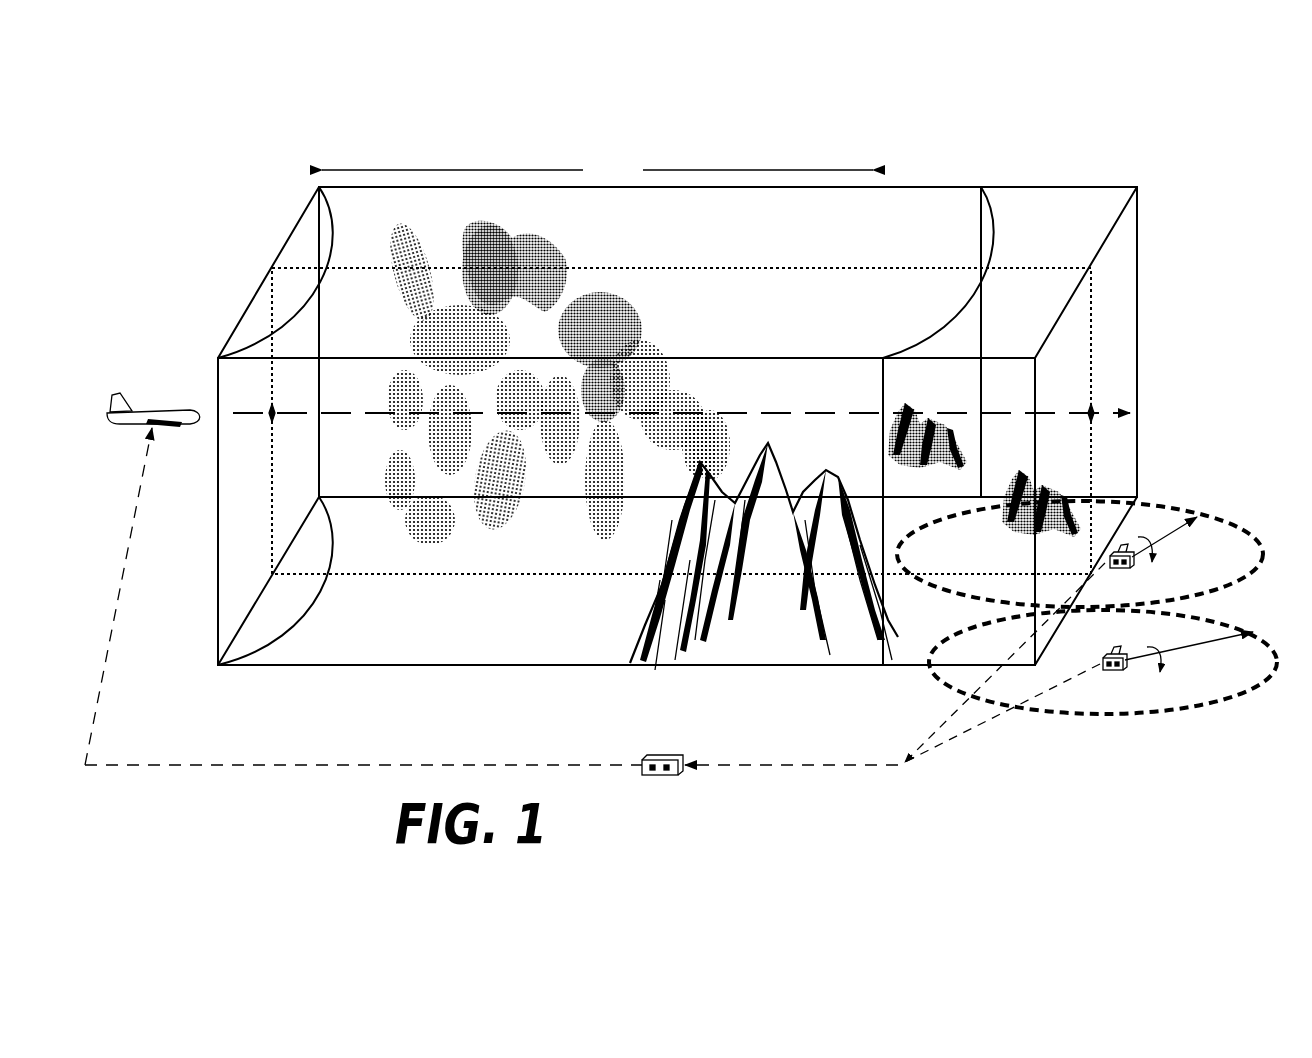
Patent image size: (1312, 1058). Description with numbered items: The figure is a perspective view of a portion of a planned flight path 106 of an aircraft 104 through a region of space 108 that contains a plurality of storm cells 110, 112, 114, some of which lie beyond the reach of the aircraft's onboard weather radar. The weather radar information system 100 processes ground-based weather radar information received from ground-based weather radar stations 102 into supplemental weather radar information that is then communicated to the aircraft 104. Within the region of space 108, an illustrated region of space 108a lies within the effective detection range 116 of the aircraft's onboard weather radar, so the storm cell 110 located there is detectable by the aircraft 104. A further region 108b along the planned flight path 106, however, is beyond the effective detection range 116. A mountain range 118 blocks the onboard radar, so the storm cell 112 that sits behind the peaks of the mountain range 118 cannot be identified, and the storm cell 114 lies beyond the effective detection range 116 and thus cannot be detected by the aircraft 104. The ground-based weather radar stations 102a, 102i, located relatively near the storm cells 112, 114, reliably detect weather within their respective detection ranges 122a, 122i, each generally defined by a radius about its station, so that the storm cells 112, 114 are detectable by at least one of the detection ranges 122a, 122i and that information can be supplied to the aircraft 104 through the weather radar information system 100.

The weather radar information system 100 is at (697, 797).
The ground-based weather radar stations 102 is at (1148, 750).
The ground-based weather radar station 102a is at (1120, 672).
The ground-based weather radar station 102i is at (1124, 570).
The aircraft 104 is at (170, 412).
The planned flight path 106 is at (236, 415).
The region of space 108 is at (1010, 127).
The illustrated region of space 108a is at (677, 145).
The region 108b is at (887, 342).
The storm cell 110 is at (422, 320).
The storm cell 112 is at (871, 423).
The storm cell 114 is at (1052, 480).
The effective detection range 116 is at (597, 166).
The mountain range 118 is at (850, 645).
The detection range 122a is at (1252, 692).
The detection range 122i is at (1150, 507).